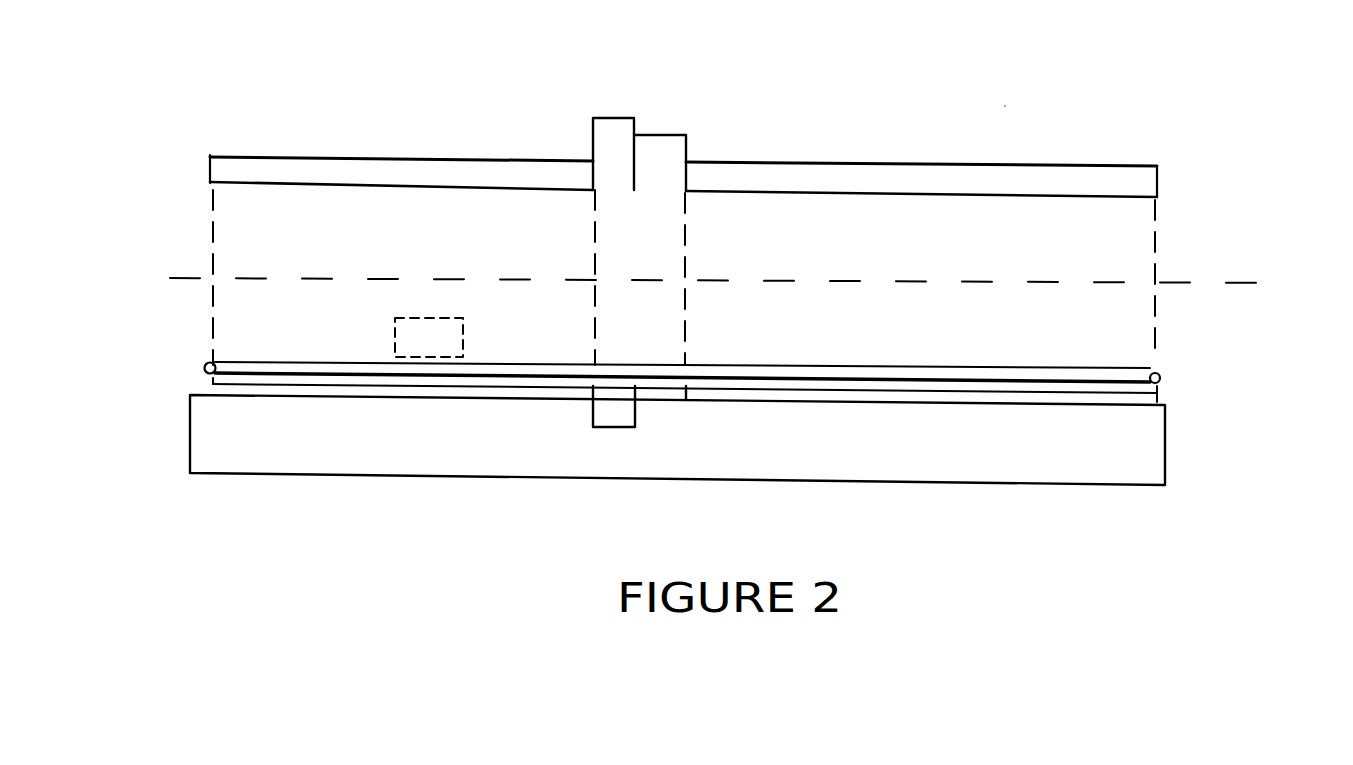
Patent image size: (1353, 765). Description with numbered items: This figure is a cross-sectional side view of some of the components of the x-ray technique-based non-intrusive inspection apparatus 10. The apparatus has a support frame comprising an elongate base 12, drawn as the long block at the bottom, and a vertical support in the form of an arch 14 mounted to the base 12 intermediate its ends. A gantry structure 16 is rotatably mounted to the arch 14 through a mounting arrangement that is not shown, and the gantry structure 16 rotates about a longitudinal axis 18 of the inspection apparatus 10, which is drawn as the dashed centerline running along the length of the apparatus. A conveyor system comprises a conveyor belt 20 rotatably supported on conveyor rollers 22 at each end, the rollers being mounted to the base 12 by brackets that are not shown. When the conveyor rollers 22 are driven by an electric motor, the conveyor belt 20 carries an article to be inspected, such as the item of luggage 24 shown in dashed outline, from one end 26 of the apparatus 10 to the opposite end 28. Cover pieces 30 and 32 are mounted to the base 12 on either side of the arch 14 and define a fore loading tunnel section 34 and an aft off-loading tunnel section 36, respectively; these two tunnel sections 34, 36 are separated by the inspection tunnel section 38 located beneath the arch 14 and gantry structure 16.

The inspection apparatus 10 is at (1004, 106).
The elongate base 12 is at (195, 446).
The arch 14 is at (663, 133).
The gantry structure 16 is at (597, 135).
The longitudinal axis 18 is at (100, 262).
The conveyor belt 20 is at (257, 357).
The conveyor rollers 22 is at (205, 366).
The item of luggage 24 is at (463, 330).
The one end 26 is at (180, 190).
The opposite end 28 is at (1157, 243).
The cover piece 30 is at (272, 157).
The cover piece 32 is at (827, 160).
The fore loading tunnel section 34 is at (475, 253).
The aft off-loading tunnel section 36 is at (990, 251).
The inspection tunnel section 38 is at (667, 243).